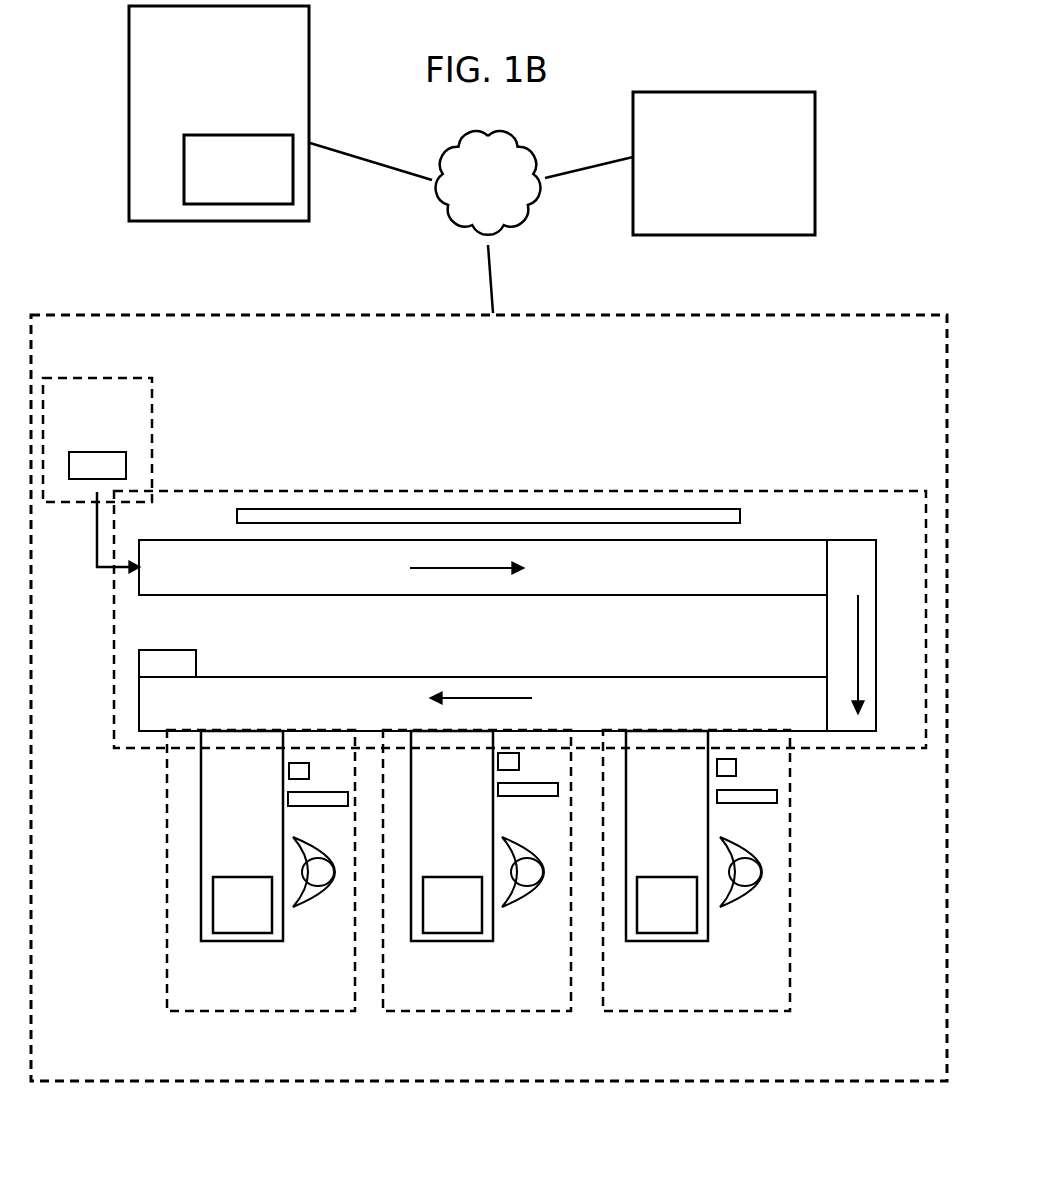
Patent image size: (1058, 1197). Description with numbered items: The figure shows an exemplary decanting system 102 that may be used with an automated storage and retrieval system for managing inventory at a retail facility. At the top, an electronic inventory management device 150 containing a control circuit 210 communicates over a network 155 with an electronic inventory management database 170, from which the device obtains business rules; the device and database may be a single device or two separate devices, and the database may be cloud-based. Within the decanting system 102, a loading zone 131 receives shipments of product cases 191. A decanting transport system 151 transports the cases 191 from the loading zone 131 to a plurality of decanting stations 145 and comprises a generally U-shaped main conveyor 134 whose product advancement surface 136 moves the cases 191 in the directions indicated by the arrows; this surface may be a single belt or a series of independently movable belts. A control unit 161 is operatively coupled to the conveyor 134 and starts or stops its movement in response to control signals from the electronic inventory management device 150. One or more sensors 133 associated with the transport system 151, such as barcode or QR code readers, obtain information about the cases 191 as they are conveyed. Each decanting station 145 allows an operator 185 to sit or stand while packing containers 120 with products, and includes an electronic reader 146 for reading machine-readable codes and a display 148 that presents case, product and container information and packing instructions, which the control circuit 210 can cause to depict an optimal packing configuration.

The electronic inventory management device 150 is at (128, 40).
The control circuit 210 is at (184, 152).
The network 155 is at (515, 230).
The electronic inventory management database 170 is at (816, 157).
The decanting system 102 is at (227, 312).
The loading zone 131 is at (98, 378).
The product cases 191 is at (104, 512).
The decanting transport system 151 is at (192, 490).
The sensors 133 is at (400, 510).
The main conveyor 134 is at (773, 540).
The product advancement surface 136 is at (507, 635).
The control unit 161 is at (167, 663).
The electronic reader 146 is at (539, 763).
The display 148 is at (557, 796).
The containers 120 is at (455, 905).
The operator 185 is at (531, 898).
The decanting stations 145 is at (478, 894).